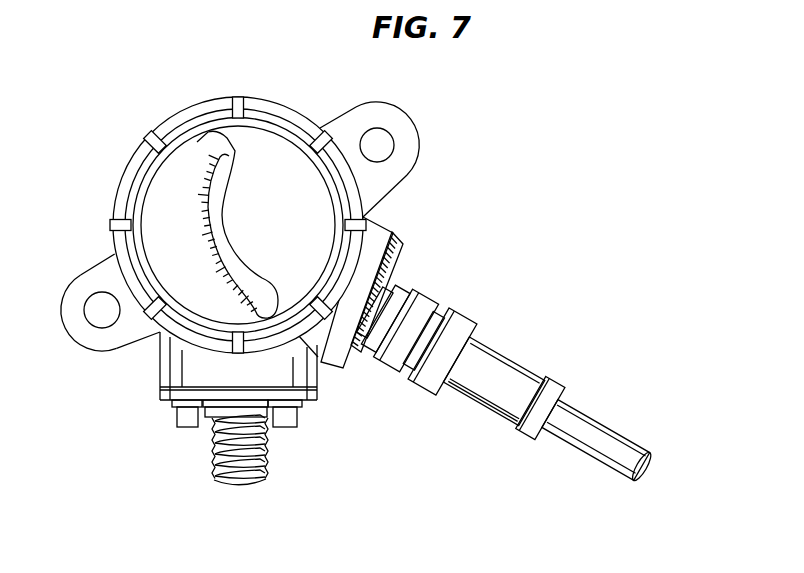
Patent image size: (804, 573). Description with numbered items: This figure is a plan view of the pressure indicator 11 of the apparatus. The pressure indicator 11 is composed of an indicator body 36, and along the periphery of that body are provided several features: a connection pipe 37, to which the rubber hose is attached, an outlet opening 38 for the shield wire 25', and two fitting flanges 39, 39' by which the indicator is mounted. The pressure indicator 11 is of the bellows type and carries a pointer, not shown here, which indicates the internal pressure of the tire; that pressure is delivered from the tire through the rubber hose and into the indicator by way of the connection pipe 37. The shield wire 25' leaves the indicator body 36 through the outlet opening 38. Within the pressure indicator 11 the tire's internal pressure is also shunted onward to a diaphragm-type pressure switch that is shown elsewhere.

The pressure indicator 11 is at (230, 84).
The indicator body 36 is at (280, 100).
The connection pipe 37 is at (212, 457).
The outlet opening 38 is at (388, 278).
The fitting flange 39 is at (399, 159).
The fitting flange 39' is at (110, 329).
The shield wire 25' is at (505, 400).